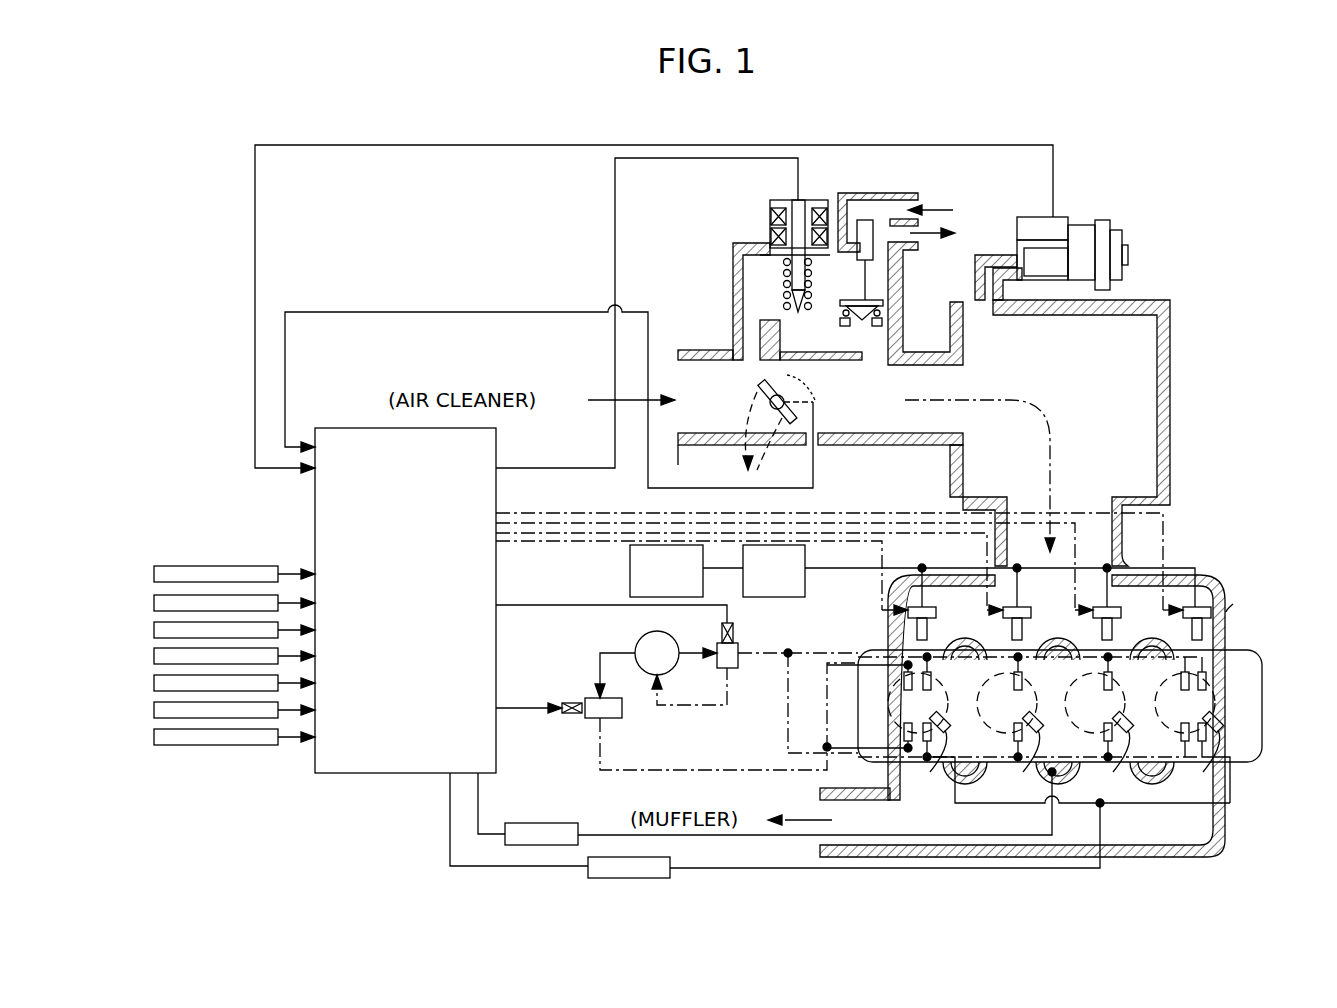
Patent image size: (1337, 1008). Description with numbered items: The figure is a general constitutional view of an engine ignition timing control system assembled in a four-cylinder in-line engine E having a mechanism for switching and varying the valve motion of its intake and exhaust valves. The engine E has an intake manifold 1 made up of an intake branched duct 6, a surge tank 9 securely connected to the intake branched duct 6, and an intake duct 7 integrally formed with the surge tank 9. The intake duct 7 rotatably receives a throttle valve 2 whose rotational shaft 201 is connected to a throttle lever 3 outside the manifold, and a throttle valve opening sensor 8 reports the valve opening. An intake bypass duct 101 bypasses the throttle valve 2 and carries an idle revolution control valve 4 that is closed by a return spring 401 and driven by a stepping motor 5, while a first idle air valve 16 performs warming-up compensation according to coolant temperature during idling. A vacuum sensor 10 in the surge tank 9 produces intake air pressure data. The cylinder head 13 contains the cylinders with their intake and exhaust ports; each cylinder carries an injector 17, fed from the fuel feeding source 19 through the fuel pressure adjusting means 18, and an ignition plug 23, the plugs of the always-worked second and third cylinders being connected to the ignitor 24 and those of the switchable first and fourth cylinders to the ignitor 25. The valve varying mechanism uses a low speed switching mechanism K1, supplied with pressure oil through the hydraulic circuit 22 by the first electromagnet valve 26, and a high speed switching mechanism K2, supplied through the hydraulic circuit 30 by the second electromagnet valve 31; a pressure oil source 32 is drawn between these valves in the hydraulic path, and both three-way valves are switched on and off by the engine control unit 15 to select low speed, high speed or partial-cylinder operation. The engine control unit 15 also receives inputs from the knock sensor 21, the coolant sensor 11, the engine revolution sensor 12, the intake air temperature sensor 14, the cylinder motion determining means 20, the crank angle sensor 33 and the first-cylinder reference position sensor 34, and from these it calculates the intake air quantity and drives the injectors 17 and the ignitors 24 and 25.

The intake manifold 1 is at (893, 392).
The throttle valve 2 is at (760, 380).
The throttle lever 3 is at (745, 462).
The idle revolution control (ISC) valve 4 is at (810, 275).
The stepping motor 5 is at (771, 215).
The intake branched duct 6 is at (1222, 618).
The intake duct 7 is at (864, 446).
The throttle valve opening sensor 8 is at (815, 384).
The surge tank 9 is at (1170, 400).
The vacuum sensor 10 is at (1100, 220).
The coolant sensor 11 is at (154, 603).
The engine revolution sensor 12 is at (154, 630).
The cylinder head 13 is at (1262, 718).
The intake air temperature sensor 14 is at (154, 656).
The engine control unit (ECU) 15 is at (385, 775).
The first idle air valve 16 is at (865, 222).
The injector 17 is at (1178, 625).
The fuel pressure adjusting means 18 is at (805, 585).
The fuel feeding source 19 is at (630, 568).
The cylinder motion determining means 20 is at (154, 683).
The knock sensor 21 is at (154, 574).
The hydraulic circuit 22 is at (700, 770).
The ignition plug 23 is at (962, 712).
The ignitor 24 is at (528, 823).
The ignitor 25 is at (590, 878).
The first electromagnet valve 26 is at (622, 716).
The hydraulic circuit 30 is at (812, 645).
The second electromagnet valve 31 is at (738, 660).
The pump 32 is at (657, 653).
The crank angle sensor 33 is at (154, 710).
The #1 cylinder reference position sensor 34 is at (154, 737).
The intake bypass duct 101 is at (745, 292).
The rotational shaft 201 is at (770, 403).
The return spring 401 is at (785, 262).
The engine E is at (1228, 612).
The low speed switching mechanism K1 is at (904, 678).
The high speed switching mechanism K2 is at (931, 678).